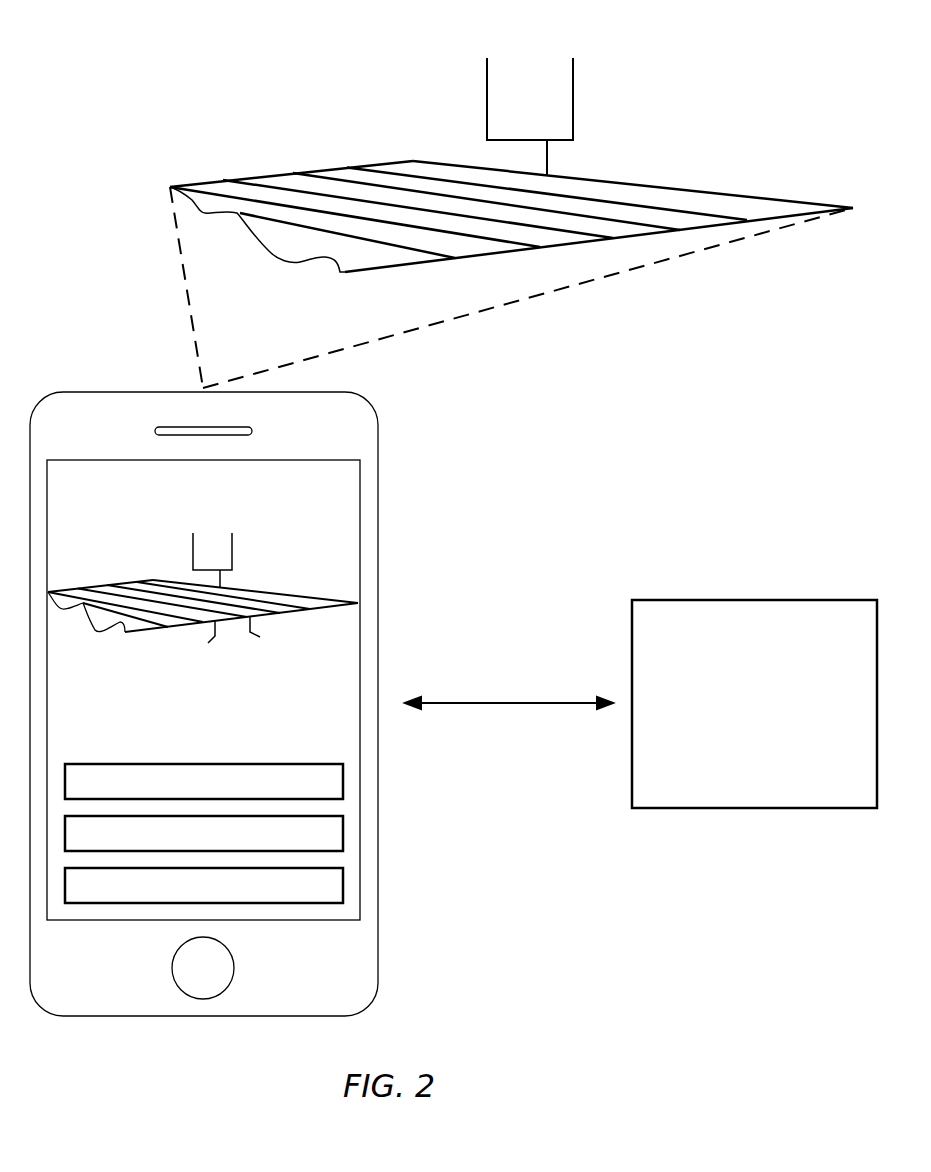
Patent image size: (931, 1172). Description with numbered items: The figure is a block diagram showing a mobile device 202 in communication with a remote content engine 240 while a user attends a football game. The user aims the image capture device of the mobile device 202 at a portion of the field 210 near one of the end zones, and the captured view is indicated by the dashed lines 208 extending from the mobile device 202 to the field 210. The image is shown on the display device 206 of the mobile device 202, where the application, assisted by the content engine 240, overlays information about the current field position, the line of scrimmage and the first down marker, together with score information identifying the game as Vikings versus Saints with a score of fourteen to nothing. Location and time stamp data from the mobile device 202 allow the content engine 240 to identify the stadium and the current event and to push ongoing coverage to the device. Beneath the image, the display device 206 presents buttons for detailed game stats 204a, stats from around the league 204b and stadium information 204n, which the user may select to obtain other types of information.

The mobile device 202 is at (378, 522).
The detailed game stats button 204a is at (343, 780).
The stats from around the league button 204b is at (343, 832).
The stadium information button 204n is at (343, 884).
The display device 206 is at (337, 638).
The camera field of view 208 is at (363, 355).
The field 210 is at (702, 133).
The content engine 240 is at (754, 704).